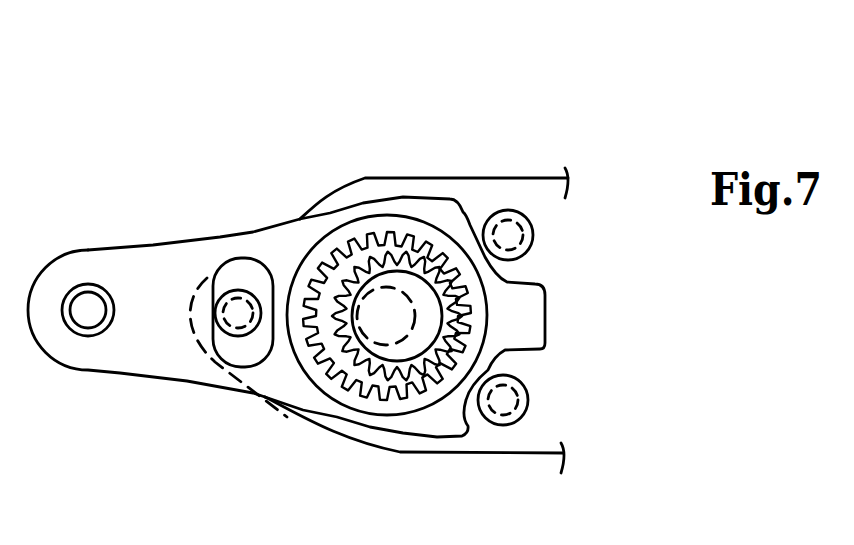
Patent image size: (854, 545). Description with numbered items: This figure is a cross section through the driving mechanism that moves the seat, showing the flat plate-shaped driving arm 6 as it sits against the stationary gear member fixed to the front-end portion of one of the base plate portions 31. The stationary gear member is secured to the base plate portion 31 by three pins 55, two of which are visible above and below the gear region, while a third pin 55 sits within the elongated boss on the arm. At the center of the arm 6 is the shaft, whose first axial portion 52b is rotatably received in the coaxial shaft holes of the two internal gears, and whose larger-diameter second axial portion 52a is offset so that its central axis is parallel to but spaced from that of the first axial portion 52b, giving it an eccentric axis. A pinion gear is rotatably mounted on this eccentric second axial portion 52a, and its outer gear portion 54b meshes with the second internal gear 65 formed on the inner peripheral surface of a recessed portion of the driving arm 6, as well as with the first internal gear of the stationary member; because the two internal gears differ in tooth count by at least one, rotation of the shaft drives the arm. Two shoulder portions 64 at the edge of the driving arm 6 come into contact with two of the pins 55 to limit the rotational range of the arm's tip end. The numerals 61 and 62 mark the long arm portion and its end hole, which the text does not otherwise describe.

The driving arm 6 is at (228, 204).
The base plate portion 31 is at (479, 199).
The second axial portion 52a is at (418, 242).
The first axial portion 52b is at (403, 286).
The gear portion 54b is at (355, 242).
The pins 55 is at (238, 307).
The arm 61 is at (162, 265).
The pivot hole 62 is at (85, 313).
The shoulder portions 64 is at (467, 432).
The second internal gear 65 is at (333, 272).